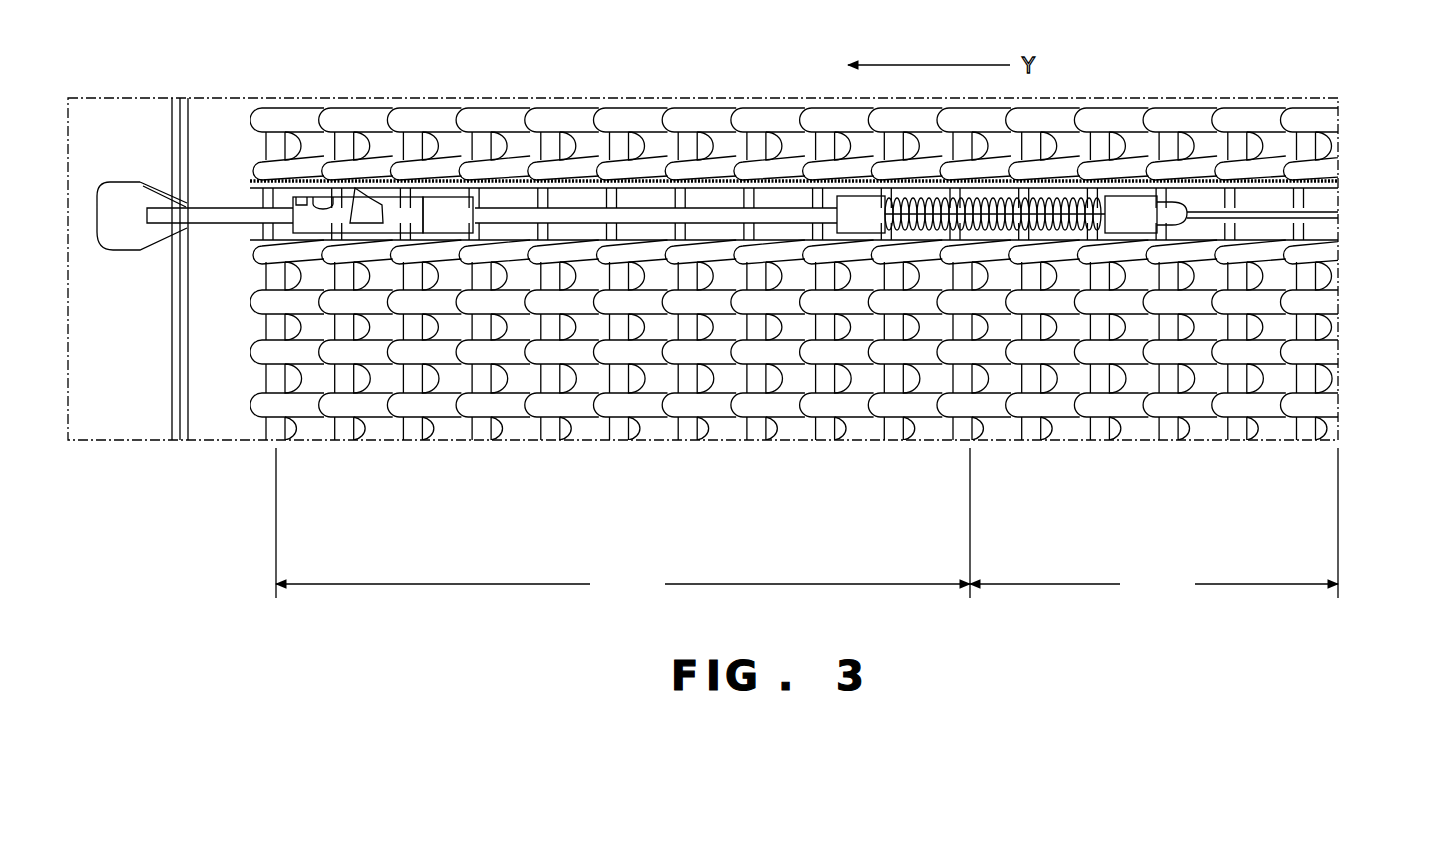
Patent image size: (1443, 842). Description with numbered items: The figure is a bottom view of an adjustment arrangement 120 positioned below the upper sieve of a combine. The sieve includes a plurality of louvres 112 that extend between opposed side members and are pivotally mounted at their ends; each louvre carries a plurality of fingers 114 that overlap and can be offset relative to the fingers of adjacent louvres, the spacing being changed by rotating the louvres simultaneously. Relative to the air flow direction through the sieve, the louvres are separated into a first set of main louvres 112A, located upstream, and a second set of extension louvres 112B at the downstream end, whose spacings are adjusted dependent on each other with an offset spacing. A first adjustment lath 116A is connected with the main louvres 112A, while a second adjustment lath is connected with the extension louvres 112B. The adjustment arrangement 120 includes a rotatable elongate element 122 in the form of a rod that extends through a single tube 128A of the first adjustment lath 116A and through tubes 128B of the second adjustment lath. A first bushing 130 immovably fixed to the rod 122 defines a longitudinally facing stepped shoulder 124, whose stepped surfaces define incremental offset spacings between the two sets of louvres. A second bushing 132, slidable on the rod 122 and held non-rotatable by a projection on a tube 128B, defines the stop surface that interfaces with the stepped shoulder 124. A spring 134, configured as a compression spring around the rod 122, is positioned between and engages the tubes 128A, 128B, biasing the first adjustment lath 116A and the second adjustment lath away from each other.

The louvres 112 is at (632, 450).
The main louvres 112A is at (1154, 523).
The extension louvres 112B is at (623, 523).
The fingers 114 is at (802, 274).
The first adjustment lath 116A is at (1338, 229).
The adjustment arrangement 120 is at (229, 243).
The rotatable elongate element 122 is at (531, 208).
The stepped shoulder 124 is at (359, 186).
The tube 128A is at (1128, 196).
The tubes 128B is at (450, 196).
The first bushing 130 is at (312, 198).
The second bushing 132 is at (410, 197).
The spring 134 is at (1050, 196).